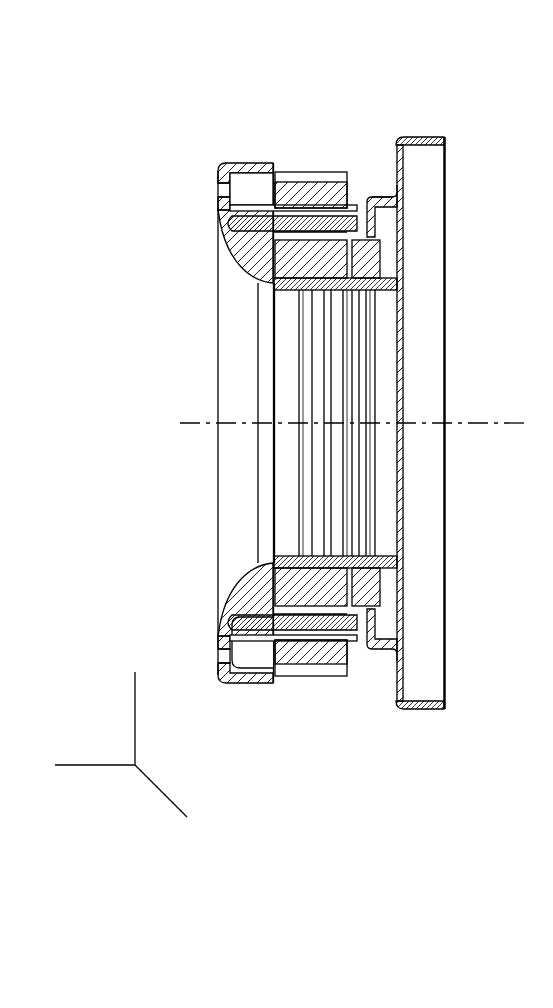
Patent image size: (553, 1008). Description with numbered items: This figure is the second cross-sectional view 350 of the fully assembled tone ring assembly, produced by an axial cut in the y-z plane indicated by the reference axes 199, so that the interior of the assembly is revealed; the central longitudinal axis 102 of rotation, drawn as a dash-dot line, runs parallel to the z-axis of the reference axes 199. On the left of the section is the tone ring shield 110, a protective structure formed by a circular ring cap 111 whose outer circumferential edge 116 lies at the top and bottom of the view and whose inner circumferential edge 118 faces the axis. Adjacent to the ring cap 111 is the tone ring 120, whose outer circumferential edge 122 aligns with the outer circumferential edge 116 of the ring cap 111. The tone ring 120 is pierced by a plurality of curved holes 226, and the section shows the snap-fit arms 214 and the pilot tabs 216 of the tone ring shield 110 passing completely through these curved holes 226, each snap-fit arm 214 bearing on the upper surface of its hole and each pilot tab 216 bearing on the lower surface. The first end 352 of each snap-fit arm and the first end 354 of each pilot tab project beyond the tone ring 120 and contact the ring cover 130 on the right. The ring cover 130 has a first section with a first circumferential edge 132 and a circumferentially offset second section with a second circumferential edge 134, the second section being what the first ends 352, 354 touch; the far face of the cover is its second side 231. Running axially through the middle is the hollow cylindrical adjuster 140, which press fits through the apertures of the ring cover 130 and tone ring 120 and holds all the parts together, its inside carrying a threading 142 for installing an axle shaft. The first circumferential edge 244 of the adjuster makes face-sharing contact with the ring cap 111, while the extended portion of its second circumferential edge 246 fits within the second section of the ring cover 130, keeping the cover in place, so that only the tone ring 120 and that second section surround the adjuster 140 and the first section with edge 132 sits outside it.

The second cross-sectional view 350 is at (150, 102).
The central longitudinal axis 102 is at (512, 413).
The tone ring shield 110 is at (230, 450).
The ring cap 111 is at (226, 170).
The outer circumferential edge 116 is at (250, 162).
The inner circumferential edge 118 is at (246, 477).
The first circumferential edge 244 is at (273, 523).
The tone ring 120 is at (333, 450).
The outer circumferential edge 122 is at (297, 170).
The snap-fit arms 214 is at (312, 210).
The curved holes 226 is at (325, 222).
The pilot tabs 216 is at (328, 240).
The hollow cylindrical adjuster 140 is at (298, 475).
The threading 142 is at (362, 447).
The second circumferential edge 246 is at (400, 490).
The ring cover 130 is at (425, 445).
The first circumferential edge 132 is at (427, 135).
The second circumferential edge 134 is at (383, 196).
The second side 231 is at (420, 344).
The first end of snap-fit arm 352 is at (352, 200).
The first end of pilot tab 354 is at (353, 238).
The reference axes 199 is at (95, 713).